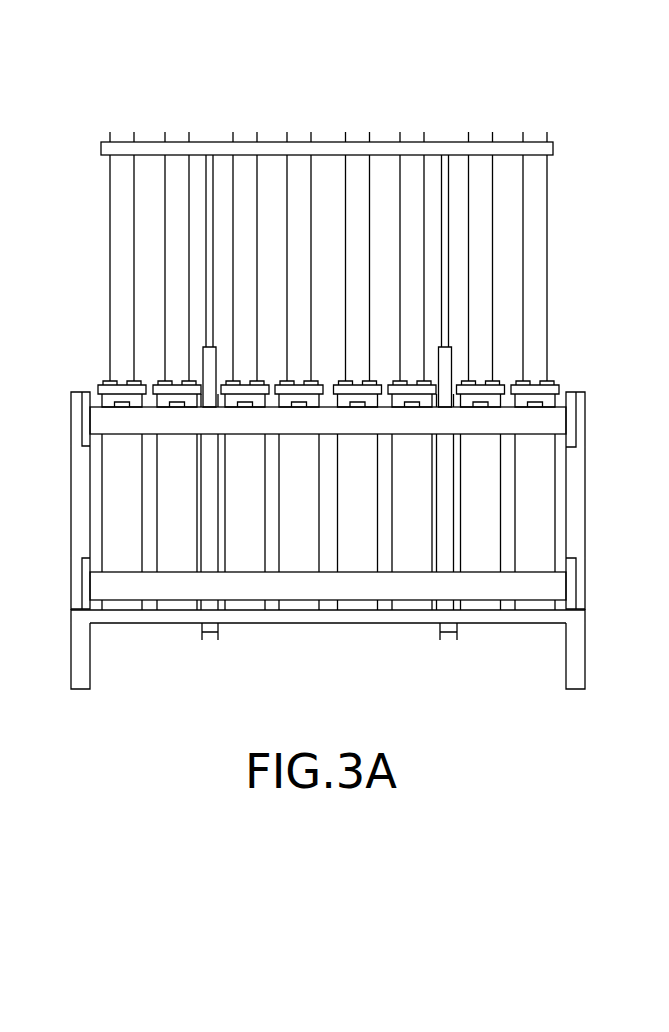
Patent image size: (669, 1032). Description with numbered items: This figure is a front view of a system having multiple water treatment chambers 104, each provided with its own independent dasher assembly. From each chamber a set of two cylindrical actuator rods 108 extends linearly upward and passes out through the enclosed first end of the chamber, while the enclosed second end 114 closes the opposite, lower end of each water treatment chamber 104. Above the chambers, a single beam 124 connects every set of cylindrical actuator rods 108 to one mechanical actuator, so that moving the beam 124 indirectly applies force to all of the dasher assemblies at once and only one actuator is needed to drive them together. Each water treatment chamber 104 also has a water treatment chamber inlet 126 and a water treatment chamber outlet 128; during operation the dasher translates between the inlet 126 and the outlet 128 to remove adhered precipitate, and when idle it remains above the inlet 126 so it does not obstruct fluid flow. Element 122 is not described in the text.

The water treatment chamber 104 is at (363, 505).
The cylindrical actuator rods 108 is at (533, 195).
The enclosed second end 114 is at (530, 612).
The frame uprights 122 is at (565, 391).
The beam 124 is at (393, 141).
The water treatment chamber inlet 126 is at (540, 435).
The water treatment chamber outlet 128 is at (540, 572).